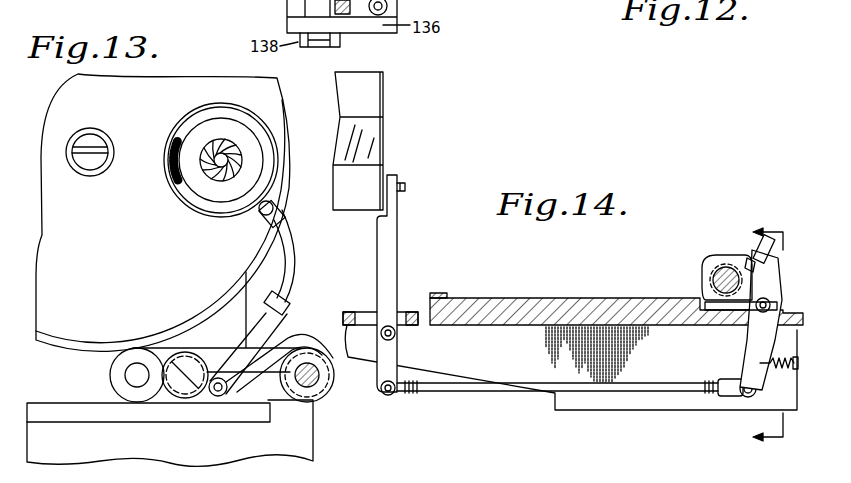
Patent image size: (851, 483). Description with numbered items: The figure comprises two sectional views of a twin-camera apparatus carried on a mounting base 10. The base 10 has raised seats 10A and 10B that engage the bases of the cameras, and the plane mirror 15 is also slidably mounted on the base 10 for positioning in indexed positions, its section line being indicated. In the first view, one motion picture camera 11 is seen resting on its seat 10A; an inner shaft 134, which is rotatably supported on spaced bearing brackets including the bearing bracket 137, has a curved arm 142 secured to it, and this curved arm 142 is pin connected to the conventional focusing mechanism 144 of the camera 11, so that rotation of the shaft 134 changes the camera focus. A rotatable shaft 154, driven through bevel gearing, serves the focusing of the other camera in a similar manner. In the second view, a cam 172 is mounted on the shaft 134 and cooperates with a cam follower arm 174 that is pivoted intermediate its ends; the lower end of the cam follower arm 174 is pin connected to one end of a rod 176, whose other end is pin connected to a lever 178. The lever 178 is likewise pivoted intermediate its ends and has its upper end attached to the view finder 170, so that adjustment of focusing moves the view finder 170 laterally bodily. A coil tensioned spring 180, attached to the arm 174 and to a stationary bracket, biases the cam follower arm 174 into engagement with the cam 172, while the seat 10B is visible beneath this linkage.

In FIG. 13, the mounting base 10 is at (190, 433).
In FIG. 14, the mounting base 10 is at (573, 340).
In FIG. 13, the raised seat 10A is at (227, 418).
In FIG. 14, the raised seat 10B is at (558, 300).
In FIG. 13, the motion picture camera 11 is at (153, 80).
In FIG. 14, the inner shaft 134 is at (725, 278).
In FIG. 13, the bearing bracket 137 is at (313, 384).
In FIG. 13, the curved arm 142 is at (287, 338).
In FIG. 13, the focusing mechanism 144 is at (259, 220).
In FIG. 13, the rotatable shaft 154 is at (323, 391).
In FIG. 14, the view finder 170 is at (383, 103).
In FIG. 14, the cam 172 is at (718, 274).
In FIG. 14, the cam follower arm 174 is at (768, 284).
In FIG. 14, the rod 176 is at (508, 387).
In FIG. 14, the lever 178 is at (388, 256).
In FIG. 14, the coil tensioned spring 180 is at (778, 368).
In FIG. 14, the plane mirror 15 is at (768, 340).